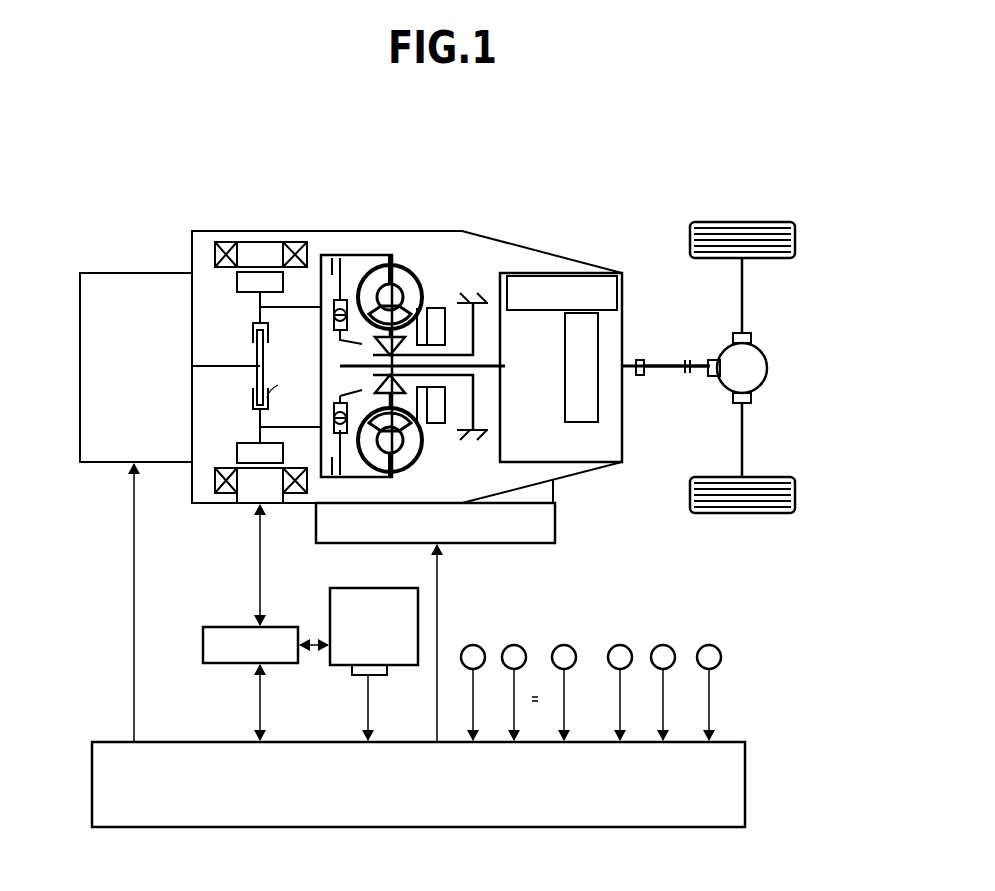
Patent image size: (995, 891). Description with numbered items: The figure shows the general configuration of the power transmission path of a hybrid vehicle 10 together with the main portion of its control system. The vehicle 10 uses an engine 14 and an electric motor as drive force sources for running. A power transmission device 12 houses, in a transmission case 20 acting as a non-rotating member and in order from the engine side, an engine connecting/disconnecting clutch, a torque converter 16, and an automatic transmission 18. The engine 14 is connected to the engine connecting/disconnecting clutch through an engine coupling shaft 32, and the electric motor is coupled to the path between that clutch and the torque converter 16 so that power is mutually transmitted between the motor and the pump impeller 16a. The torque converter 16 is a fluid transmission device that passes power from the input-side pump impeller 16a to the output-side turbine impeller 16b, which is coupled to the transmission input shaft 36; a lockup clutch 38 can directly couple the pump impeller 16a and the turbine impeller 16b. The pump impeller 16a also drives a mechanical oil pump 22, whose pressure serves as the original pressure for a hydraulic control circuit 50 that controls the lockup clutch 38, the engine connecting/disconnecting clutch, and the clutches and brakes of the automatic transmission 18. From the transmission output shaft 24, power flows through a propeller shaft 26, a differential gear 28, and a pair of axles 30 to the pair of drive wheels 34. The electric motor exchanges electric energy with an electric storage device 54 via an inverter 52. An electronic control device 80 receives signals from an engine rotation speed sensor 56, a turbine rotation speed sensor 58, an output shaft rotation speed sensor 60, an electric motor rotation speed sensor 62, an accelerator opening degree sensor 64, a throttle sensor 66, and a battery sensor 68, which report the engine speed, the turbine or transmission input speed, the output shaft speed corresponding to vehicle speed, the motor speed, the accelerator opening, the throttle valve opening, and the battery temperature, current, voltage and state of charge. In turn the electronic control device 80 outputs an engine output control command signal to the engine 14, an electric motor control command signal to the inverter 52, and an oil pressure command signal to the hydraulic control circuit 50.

The vehicle 10 is at (438, 464).
The power transmission device 12 is at (425, 327).
The engine 14 is at (104, 275).
The torque converter 16 is at (413, 351).
The pump impeller 16a is at (405, 456).
The turbine impeller 16b is at (366, 458).
The automatic transmission 18 is at (608, 322).
The transmission case 20 is at (418, 231).
The oil pump 22 is at (437, 420).
The transmission output shaft 24 is at (640, 360).
The propeller shaft 26 is at (663, 370).
The differential gear 28 is at (757, 352).
The axles 30 is at (742, 297).
The engine coupling shaft 32 is at (225, 366).
The drive wheels 34 is at (692, 241).
The transmission input shaft 36 is at (490, 368).
The lockup clutch 38 is at (350, 262).
The hydraulic control circuit 50 is at (553, 514).
The inverter 52 is at (205, 660).
The electric storage device 54 is at (340, 590).
The engine rotation speed sensor 56 is at (470, 647).
The turbine rotation speed sensor 58 is at (511, 647).
The output shaft rotation speed sensor 60 is at (561, 647).
The electric motor rotation speed sensor 62 is at (617, 647).
The accelerator opening degree sensor 64 is at (660, 647).
The throttle sensor 66 is at (706, 647).
The battery sensor 68 is at (352, 668).
The electronic control device 80 is at (730, 752).